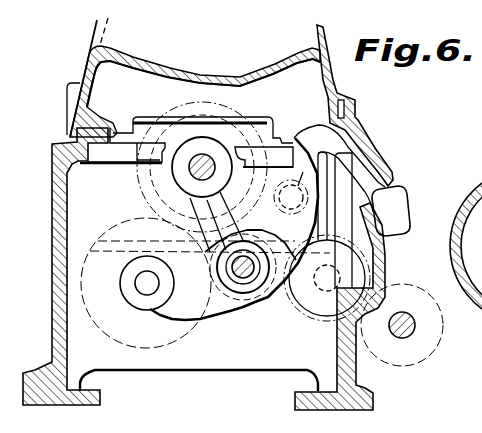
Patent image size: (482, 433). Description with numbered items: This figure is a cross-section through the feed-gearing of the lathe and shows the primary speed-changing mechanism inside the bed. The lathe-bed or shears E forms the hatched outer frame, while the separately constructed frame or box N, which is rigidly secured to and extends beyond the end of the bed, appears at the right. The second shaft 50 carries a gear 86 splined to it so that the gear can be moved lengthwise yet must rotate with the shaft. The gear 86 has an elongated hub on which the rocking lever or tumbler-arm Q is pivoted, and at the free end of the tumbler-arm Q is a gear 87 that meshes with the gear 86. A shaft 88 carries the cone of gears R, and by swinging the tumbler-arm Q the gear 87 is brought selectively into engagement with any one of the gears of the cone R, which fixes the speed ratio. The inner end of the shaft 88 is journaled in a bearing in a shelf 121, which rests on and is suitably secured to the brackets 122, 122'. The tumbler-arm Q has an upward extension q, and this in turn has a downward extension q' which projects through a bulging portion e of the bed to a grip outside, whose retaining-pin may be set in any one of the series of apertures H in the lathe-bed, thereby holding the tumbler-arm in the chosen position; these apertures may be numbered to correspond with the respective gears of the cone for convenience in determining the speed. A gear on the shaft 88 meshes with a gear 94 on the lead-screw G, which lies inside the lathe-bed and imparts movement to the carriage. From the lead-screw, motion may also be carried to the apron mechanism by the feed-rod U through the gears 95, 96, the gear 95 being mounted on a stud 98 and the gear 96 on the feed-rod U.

The shelf 121 is at (142, 127).
The bracket 122 is at (122, 164).
The bracket 122' is at (278, 128).
The shaft 88 is at (260, 132).
The cone of gears R is at (226, 121).
The aperture H is at (333, 81).
The downward extension q' is at (347, 166).
The bulging portion e is at (382, 165).
The frame or box N is at (479, 185).
The lead-screw G is at (303, 171).
The upward extension q is at (323, 196).
The gear 94 is at (308, 210).
The stud 98 is at (326, 281).
The gear 95 is at (313, 318).
The lathe-bed or shears E is at (52, 250).
The tumbler-arm Q is at (217, 308).
The gear 87 is at (152, 328).
The gear 86 is at (245, 274).
The second shaft 50 is at (270, 293).
The gear 96 is at (397, 360).
The feed-rod U is at (407, 333).